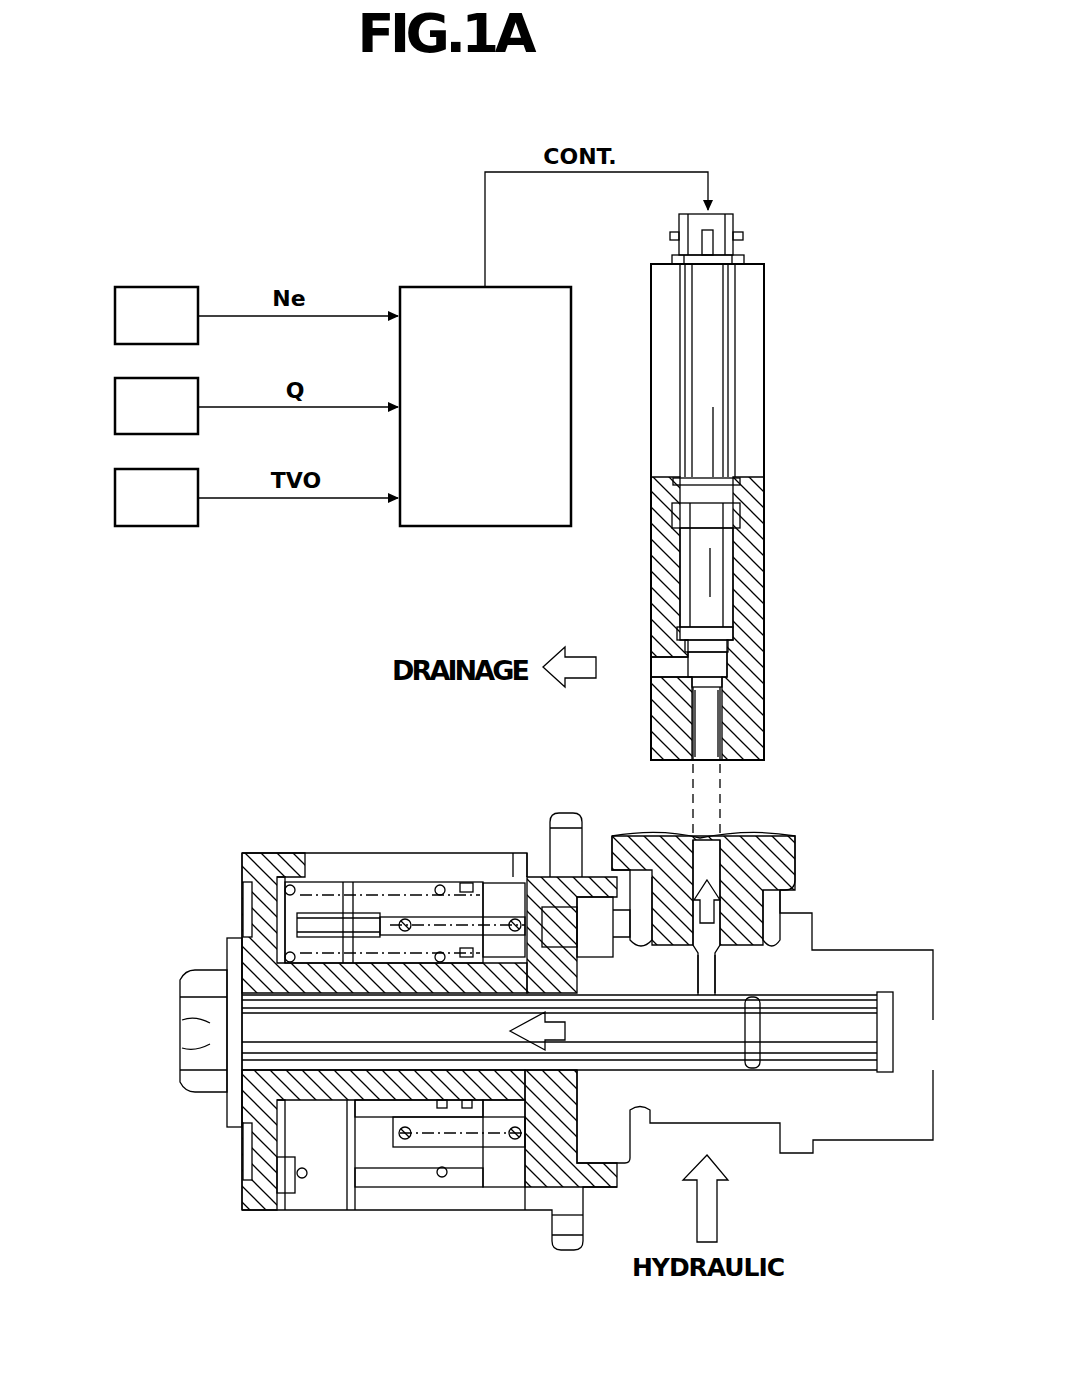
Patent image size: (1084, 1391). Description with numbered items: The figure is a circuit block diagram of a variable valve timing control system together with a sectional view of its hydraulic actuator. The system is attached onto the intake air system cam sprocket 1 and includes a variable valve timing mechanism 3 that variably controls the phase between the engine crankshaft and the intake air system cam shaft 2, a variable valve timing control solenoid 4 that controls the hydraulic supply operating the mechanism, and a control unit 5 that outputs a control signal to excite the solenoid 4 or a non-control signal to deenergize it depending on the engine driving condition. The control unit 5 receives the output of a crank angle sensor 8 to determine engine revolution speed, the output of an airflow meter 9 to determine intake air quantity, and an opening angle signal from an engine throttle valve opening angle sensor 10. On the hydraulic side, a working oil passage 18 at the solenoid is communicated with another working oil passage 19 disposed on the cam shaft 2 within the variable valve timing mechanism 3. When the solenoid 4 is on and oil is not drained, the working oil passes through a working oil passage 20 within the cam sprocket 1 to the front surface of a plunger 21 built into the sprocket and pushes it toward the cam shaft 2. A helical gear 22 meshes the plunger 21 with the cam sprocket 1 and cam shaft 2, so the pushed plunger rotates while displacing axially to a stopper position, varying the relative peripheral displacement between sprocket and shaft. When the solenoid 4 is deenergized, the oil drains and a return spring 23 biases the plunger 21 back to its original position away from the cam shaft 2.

The intake air system cam sprocket 1 is at (568, 1245).
The intake air system cam shaft 2 is at (863, 1103).
The variable valve timing mechanism 3 is at (315, 818).
The variable valve timing control solenoid 4 is at (758, 383).
The control unit 5 is at (432, 287).
The crank angle sensor 8 is at (171, 287).
The airflow meter 9 is at (115, 403).
The engine throttle valve opening angle sensor 10 is at (157, 526).
The working oil passage 18 is at (708, 718).
The working oil passage 19 is at (664, 1062).
The working oil passage 20 is at (243, 1027).
The plunger 21 is at (243, 892).
The helical gear 22 is at (410, 880).
The return spring 23 is at (423, 1137).